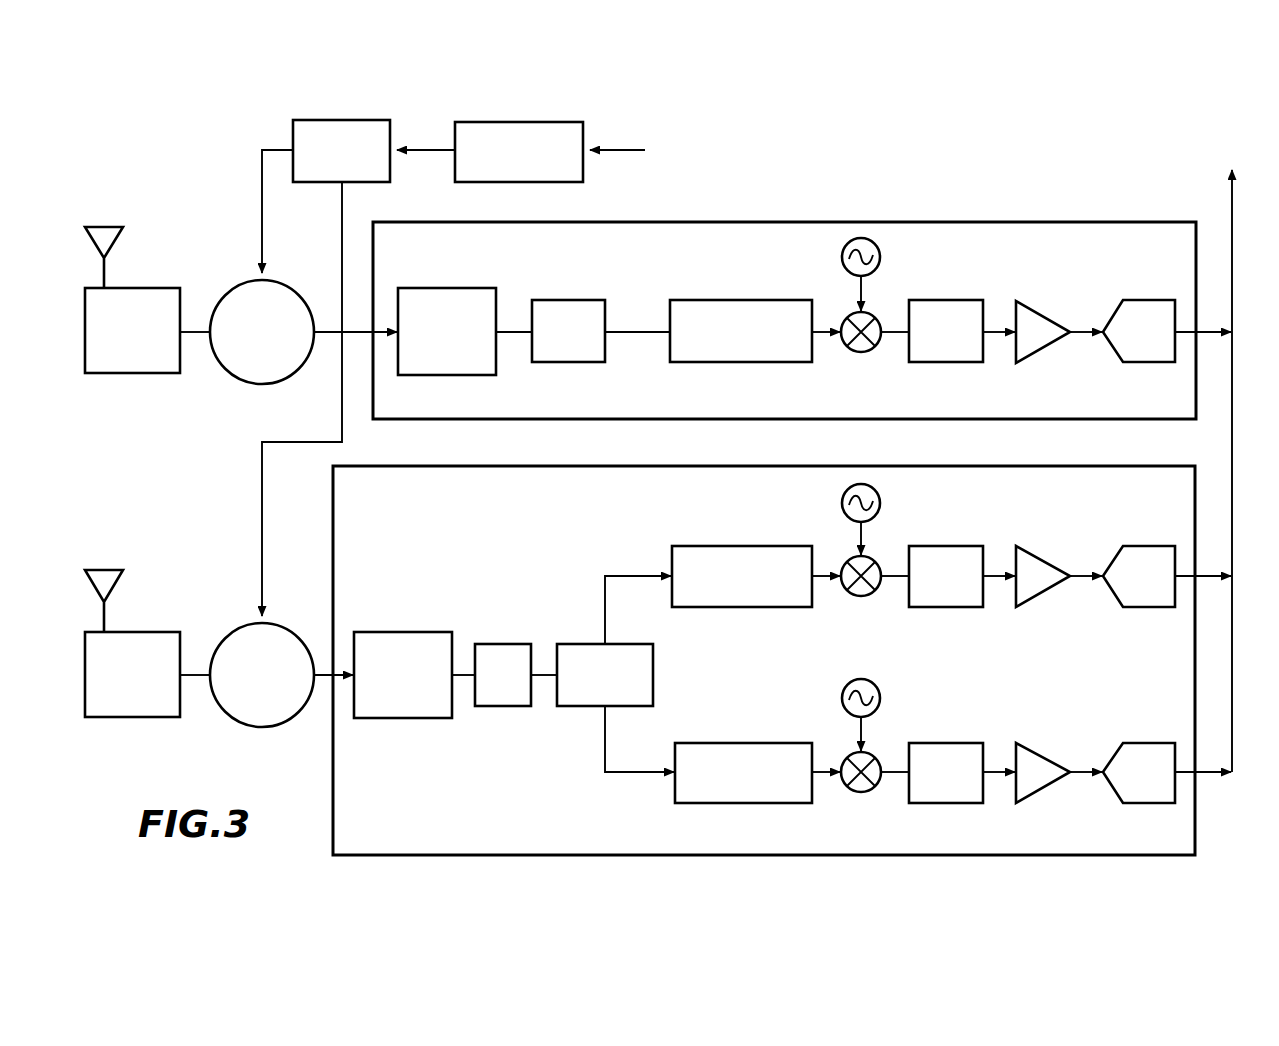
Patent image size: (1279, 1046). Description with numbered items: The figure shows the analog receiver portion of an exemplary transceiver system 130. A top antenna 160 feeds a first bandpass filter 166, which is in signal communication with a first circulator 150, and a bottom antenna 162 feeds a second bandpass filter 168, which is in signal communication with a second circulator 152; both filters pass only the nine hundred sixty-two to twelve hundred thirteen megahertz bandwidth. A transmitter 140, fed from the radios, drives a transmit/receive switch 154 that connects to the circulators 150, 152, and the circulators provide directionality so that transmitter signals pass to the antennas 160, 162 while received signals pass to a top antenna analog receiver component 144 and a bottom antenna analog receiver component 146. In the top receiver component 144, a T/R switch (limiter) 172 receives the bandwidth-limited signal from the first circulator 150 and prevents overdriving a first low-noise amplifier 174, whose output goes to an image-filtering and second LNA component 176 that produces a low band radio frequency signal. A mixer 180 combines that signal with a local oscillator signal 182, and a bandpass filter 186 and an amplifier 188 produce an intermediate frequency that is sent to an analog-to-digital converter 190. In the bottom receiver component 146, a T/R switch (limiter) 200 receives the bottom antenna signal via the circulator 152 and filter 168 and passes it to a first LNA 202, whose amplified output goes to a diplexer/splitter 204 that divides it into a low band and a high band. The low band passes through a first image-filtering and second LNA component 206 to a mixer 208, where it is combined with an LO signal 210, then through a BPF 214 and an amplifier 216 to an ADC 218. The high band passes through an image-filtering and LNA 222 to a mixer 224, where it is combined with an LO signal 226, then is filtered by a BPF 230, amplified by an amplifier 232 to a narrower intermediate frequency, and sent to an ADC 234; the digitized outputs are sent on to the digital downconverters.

The transceiver system 130 is at (1102, 142).
The transmitter 140 is at (505, 121).
The top antenna analog receiver component 144 is at (1143, 222).
The bottom antenna analog receiver component 146 is at (1143, 466).
The first circulator 150 is at (240, 284).
The second circulator 152 is at (240, 626).
The transmit/receive switch 154 is at (345, 120).
The top antenna 160 is at (116, 236).
The bottom antenna 162 is at (116, 579).
The first bandpass filter 166 is at (130, 288).
The second bandpass filter 168 is at (130, 632).
The T/R switch (limiter) 172 is at (445, 288).
The first low-noise amplifier 174 is at (580, 300).
The image-filtering and second LNA component 176 is at (685, 362).
The mixer 180 is at (861, 352).
The local oscillator signal 182 is at (848, 248).
The bandpass filter 186 is at (950, 362).
The amplifier 188 is at (1034, 353).
The analog-to-digital converter 190 is at (1152, 362).
The T/R switch (limiter) 200 is at (404, 632).
The first LNA 202 is at (510, 644).
The diplexer/splitter 204 is at (585, 644).
The first image-filtering and second LNA component 206 is at (720, 607).
The mixer 208 is at (861, 596).
The LO signal 210 is at (848, 494).
The BPF 214 is at (950, 607).
The amplifier 216 is at (1045, 559).
The ADC 218 is at (1152, 546).
The image-filtering and LNA 222 is at (720, 803).
The mixer 224 is at (861, 792).
The LO signal 226 is at (848, 689).
The BPF 230 is at (950, 803).
The amplifier 232 is at (1045, 755).
The ADC 234 is at (1152, 743).